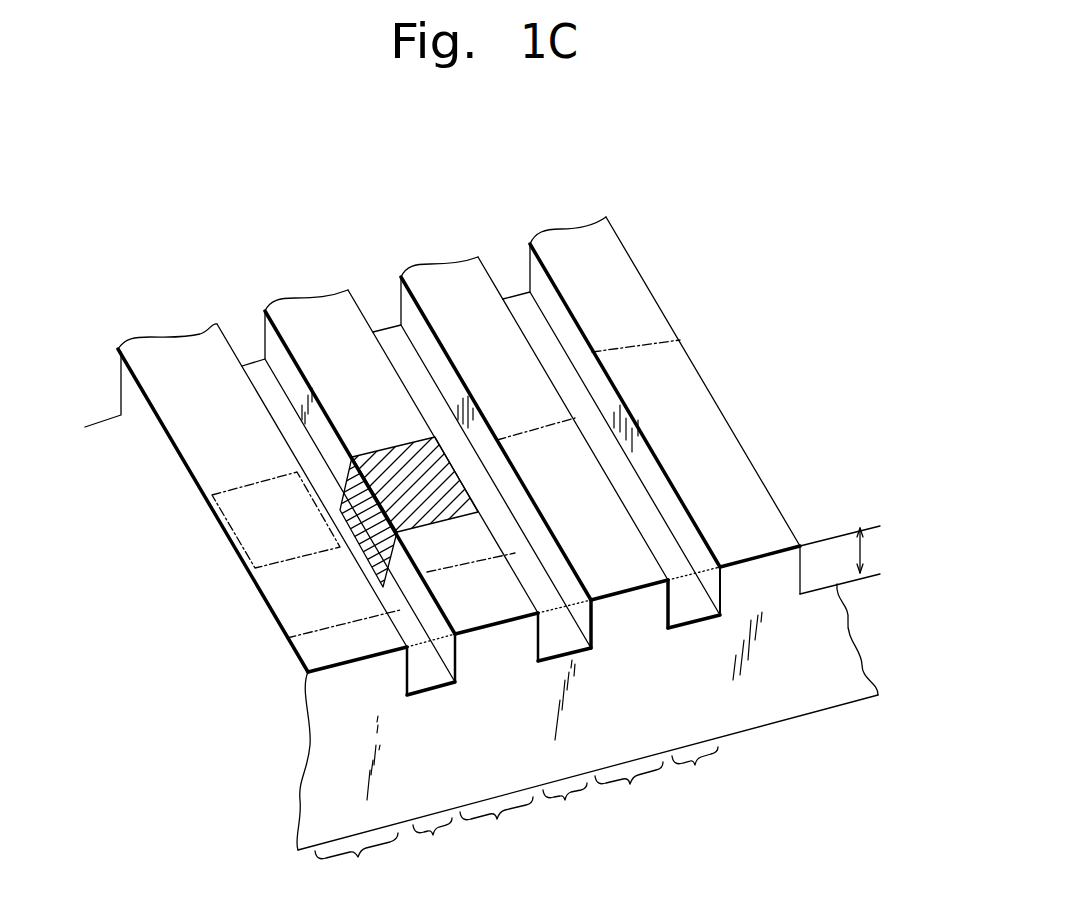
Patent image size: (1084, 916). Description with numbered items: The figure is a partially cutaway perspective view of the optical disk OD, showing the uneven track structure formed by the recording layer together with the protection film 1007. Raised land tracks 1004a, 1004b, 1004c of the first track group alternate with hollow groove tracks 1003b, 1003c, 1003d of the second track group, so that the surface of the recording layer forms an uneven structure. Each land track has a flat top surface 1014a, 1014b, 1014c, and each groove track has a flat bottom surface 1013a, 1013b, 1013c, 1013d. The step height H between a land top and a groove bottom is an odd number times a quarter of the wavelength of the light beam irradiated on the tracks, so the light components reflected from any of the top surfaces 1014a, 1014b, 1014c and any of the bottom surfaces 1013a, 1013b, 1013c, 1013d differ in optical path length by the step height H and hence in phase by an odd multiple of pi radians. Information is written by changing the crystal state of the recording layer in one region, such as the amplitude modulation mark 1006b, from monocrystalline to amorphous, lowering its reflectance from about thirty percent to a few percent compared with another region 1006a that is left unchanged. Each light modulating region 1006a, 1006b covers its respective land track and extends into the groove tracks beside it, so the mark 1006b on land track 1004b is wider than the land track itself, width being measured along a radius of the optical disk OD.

The optical disk OD is at (673, 218).
The step height H is at (857, 532).
The protection film 1007 is at (820, 696).
The flat bottom surface 1013a is at (108, 412).
The flat bottom surface 1013b is at (252, 366).
The flat bottom surface 1013c is at (392, 326).
The flat bottom surface 1013d is at (516, 295).
The flat top surface 1014a is at (200, 352).
The flat top surface 1014b is at (318, 303).
The flat top surface 1014c is at (453, 270).
The light modulating region 1006a is at (218, 518).
The amplitude modulation mark 1006b is at (400, 470).
The land track 1004a is at (356, 860).
The land track 1004b is at (496, 822).
The land track 1004c is at (629, 787).
The groove track 1003b is at (435, 841).
The groove track 1003c is at (565, 805).
The groove track 1003d is at (698, 771).